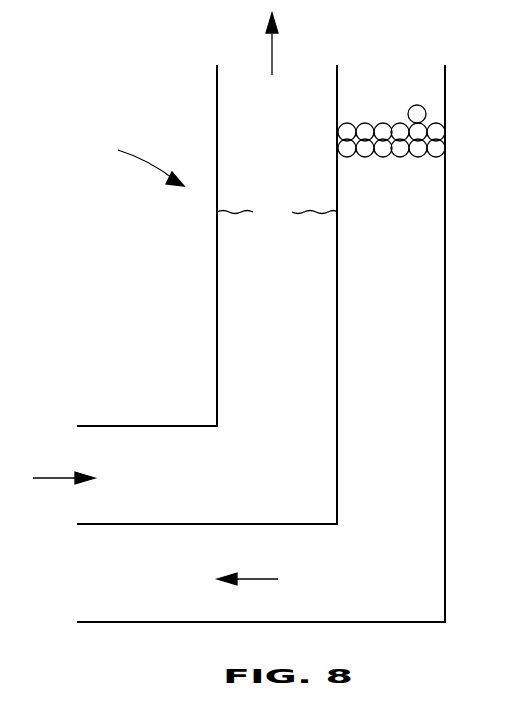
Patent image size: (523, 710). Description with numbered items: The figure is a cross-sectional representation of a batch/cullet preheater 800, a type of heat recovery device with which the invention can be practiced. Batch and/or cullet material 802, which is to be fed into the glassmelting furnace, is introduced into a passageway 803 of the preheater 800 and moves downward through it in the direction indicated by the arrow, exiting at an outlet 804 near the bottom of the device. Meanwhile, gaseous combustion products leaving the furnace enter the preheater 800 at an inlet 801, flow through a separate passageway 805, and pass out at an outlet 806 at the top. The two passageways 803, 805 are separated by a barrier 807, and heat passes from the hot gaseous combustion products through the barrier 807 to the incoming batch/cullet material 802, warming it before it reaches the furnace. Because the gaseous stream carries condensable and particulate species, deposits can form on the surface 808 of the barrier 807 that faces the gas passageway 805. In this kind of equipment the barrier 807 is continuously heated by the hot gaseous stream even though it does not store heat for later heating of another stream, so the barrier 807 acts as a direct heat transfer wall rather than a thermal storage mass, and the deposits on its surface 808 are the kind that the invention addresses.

The batch/cullet preheater 800 is at (145, 158).
The inlet 801 is at (81, 478).
The batch and/or cullet material 802 is at (391, 115).
The passageway 803 is at (261, 343).
The outlet 804 is at (267, 579).
The passageway 805 is at (169, 245).
The outlet 806 is at (272, 58).
The barrier 807 is at (337, 65).
The surface 808 is at (277, 212).